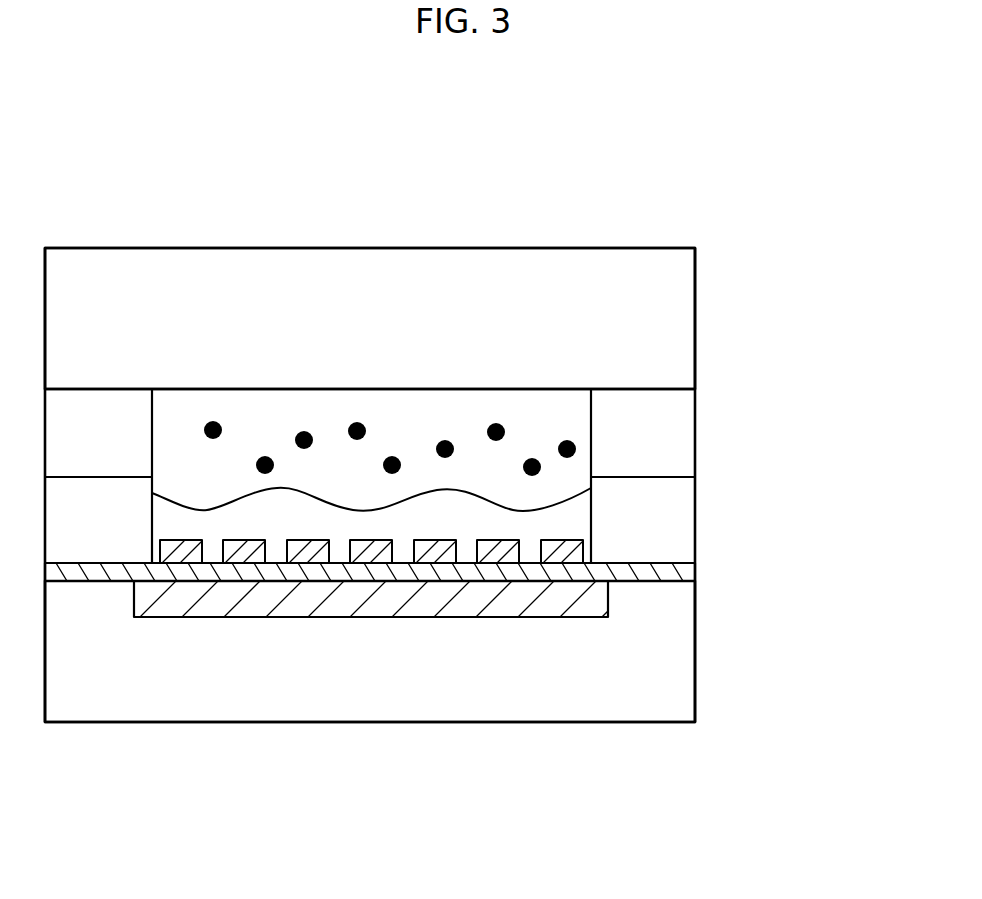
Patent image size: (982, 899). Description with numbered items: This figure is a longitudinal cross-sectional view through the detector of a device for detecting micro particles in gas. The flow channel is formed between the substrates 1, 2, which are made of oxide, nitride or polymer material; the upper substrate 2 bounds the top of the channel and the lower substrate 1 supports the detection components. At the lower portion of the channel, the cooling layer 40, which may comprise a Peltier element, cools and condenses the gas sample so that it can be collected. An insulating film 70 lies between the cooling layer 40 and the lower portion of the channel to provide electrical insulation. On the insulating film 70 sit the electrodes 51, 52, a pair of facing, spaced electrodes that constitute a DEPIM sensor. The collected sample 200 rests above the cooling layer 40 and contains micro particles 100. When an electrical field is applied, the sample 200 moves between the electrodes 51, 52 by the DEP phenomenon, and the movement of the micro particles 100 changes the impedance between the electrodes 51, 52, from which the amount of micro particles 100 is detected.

The substrate 1 is at (535, 685).
The substrate 2 is at (468, 293).
The cooling layer 40 is at (212, 600).
The electrode 51 is at (307, 565).
The electrode 52 is at (372, 566).
The insulating film 70 is at (645, 583).
The micro particles 100 is at (508, 431).
The sample 200 is at (552, 521).